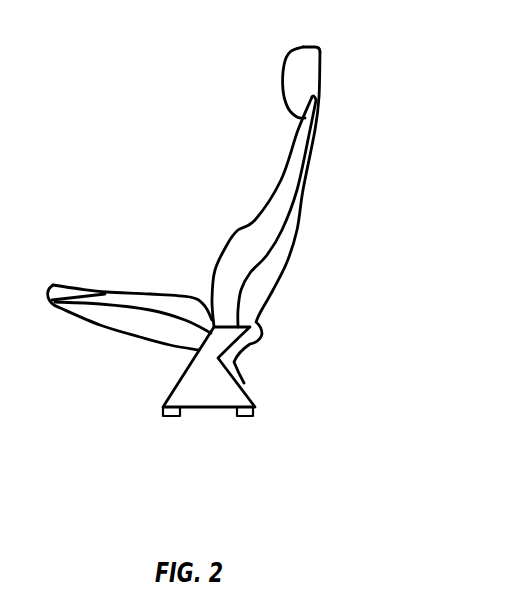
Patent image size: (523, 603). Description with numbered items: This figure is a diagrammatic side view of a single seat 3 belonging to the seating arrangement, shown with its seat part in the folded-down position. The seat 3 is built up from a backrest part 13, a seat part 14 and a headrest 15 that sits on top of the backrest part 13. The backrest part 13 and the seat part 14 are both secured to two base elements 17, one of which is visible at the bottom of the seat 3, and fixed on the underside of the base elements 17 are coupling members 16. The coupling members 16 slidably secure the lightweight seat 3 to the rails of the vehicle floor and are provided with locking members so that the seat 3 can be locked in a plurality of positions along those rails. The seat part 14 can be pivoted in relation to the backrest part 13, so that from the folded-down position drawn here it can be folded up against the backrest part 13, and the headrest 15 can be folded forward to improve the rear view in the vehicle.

The seat 3 is at (314, 170).
The backrest part 13 is at (282, 182).
The seat part 14 is at (123, 302).
The headrest 15 is at (298, 70).
The coupling members 16 is at (242, 420).
The base elements 17 is at (177, 398).